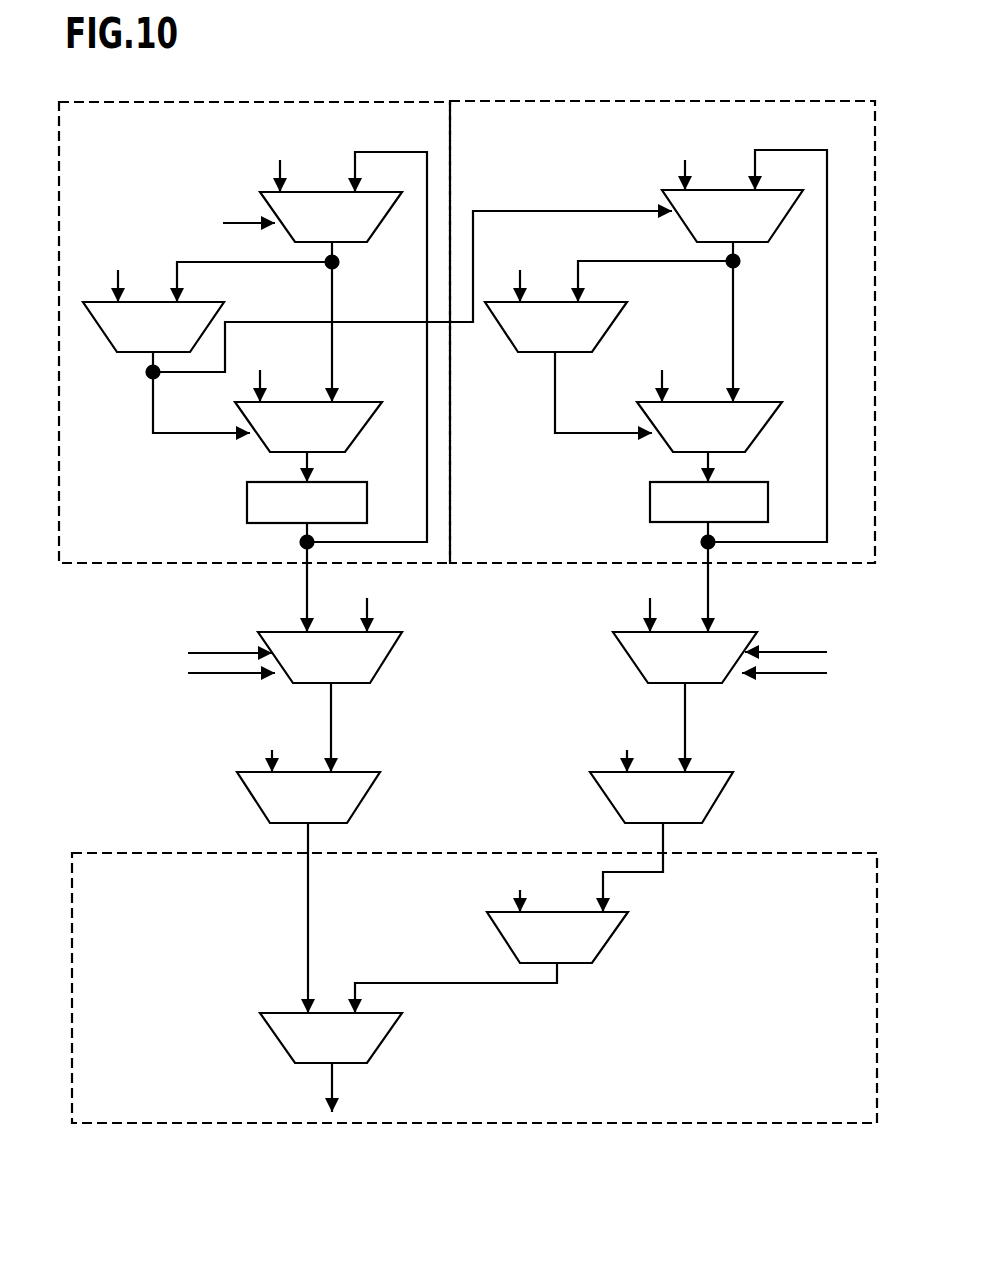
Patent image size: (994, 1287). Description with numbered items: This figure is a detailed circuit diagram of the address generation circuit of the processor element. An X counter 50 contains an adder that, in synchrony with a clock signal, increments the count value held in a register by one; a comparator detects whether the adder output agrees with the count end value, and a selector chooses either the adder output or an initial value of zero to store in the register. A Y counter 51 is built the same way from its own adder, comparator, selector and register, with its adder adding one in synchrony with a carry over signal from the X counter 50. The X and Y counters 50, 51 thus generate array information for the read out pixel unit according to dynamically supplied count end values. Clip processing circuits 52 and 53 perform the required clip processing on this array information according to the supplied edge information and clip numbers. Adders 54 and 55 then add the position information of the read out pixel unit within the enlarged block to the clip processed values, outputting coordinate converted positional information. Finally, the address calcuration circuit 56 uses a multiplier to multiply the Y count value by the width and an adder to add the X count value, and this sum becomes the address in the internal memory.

The X counter 50 is at (152, 103).
The Y counter 51 is at (512, 102).
The clip processing circuit 52 is at (390, 652).
The clip processing circuit 53 is at (622, 648).
The adder 54 is at (363, 797).
The adder 55 is at (600, 793).
The address calcuration circuit 56 is at (510, 1123).